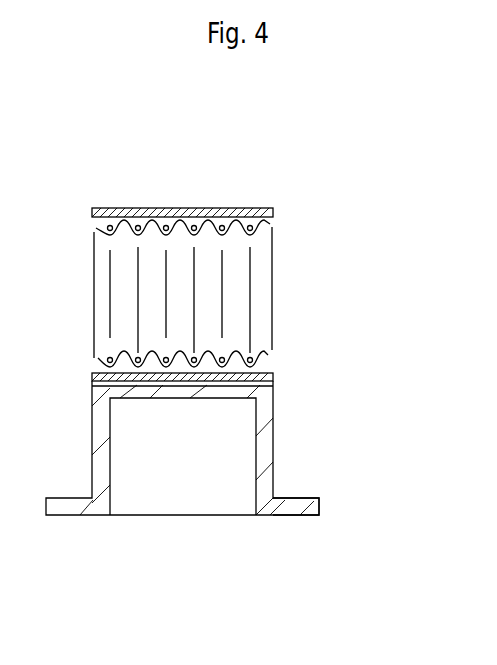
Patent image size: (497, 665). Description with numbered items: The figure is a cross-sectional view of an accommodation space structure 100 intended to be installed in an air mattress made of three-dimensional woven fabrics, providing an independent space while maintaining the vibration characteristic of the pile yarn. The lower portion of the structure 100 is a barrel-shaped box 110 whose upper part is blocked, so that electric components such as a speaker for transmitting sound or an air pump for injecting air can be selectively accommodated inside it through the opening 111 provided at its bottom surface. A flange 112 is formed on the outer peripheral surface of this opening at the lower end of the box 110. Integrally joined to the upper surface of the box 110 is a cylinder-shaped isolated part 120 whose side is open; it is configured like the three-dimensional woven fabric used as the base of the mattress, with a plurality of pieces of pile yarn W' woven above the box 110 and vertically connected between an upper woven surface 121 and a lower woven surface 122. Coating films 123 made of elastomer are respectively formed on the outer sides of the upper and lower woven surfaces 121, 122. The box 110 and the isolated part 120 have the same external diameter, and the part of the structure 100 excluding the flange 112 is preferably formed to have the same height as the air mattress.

The structure 100 is at (310, 153).
The box 110 is at (225, 518).
The opening 111 is at (195, 498).
The flange 112 is at (297, 507).
The isolated part 120 is at (265, 288).
The upper woven surface 121 is at (273, 236).
The lower woven surface 122 is at (230, 339).
The coating film 123 is at (273, 212).
The pile yarn W' is at (224, 292).